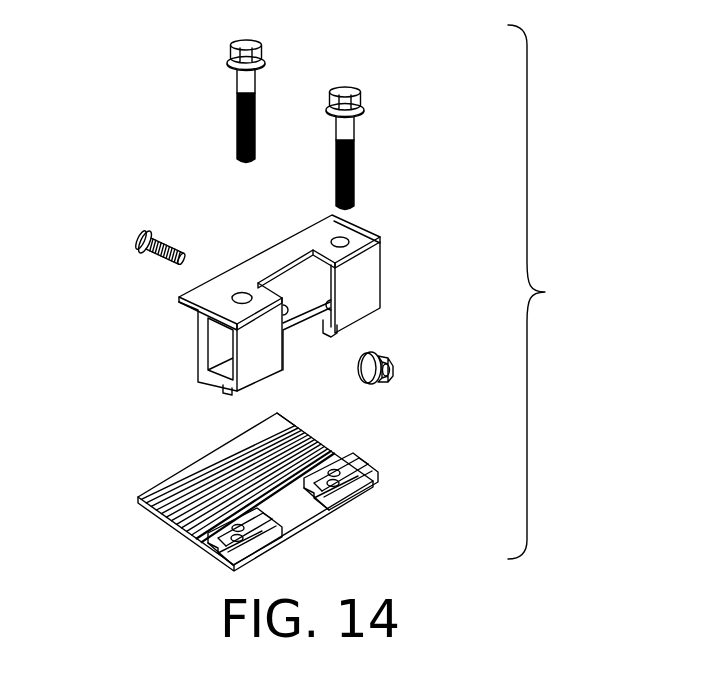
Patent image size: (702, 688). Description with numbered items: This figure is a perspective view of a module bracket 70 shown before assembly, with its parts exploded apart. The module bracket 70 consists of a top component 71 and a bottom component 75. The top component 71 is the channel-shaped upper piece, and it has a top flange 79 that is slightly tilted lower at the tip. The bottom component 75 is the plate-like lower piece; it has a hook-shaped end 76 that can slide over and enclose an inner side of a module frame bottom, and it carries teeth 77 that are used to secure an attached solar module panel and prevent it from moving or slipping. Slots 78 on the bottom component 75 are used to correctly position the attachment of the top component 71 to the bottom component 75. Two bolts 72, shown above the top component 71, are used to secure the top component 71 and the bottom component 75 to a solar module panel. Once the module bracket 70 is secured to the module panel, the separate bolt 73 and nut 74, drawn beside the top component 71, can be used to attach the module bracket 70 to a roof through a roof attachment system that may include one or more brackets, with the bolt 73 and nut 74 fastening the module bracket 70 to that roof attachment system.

The module bracket 70 is at (581, 299).
The top component 71 is at (381, 243).
The bolts 72 is at (260, 44).
The bolt 73 is at (137, 240).
The nut 74 is at (397, 372).
The bottom component 75 is at (148, 517).
The hook-shaped end 76 is at (163, 503).
The teeth 77 is at (306, 436).
The slots 78 is at (280, 534).
The top flange 79 is at (179, 300).